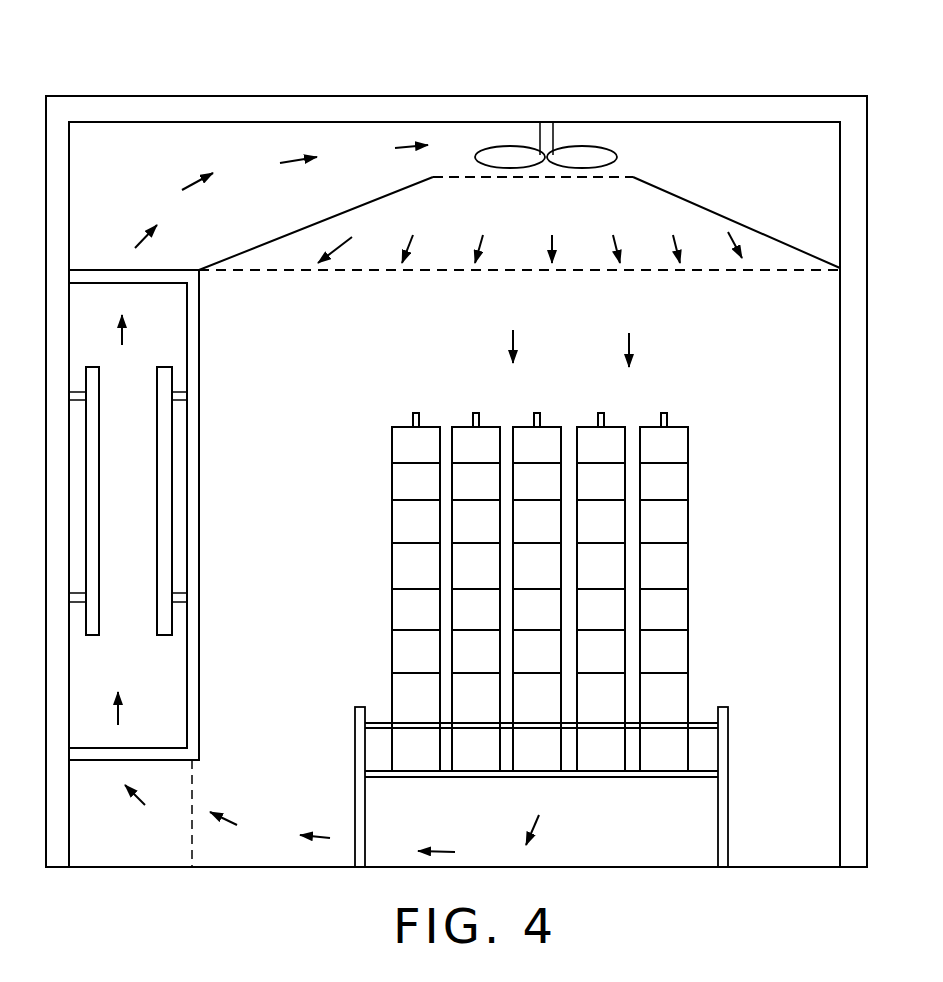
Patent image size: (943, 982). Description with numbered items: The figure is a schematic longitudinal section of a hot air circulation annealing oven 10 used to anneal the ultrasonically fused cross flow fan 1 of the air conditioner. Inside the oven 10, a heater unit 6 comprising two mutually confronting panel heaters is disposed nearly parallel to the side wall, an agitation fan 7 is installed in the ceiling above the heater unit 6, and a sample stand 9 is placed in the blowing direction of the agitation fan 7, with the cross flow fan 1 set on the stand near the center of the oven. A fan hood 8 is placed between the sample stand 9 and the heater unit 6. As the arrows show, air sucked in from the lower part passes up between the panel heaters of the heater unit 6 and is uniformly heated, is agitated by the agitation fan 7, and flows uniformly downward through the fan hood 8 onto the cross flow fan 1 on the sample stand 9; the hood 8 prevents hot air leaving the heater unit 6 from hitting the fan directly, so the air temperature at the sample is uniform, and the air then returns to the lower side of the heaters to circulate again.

The cross flow fan 1 is at (690, 568).
The heater unit 6 is at (172, 455).
The agitation fan 7 is at (617, 157).
The fan hood 8 is at (743, 225).
The sample stand 9 is at (728, 797).
The hot air circulation annealing oven 10 is at (807, 96).